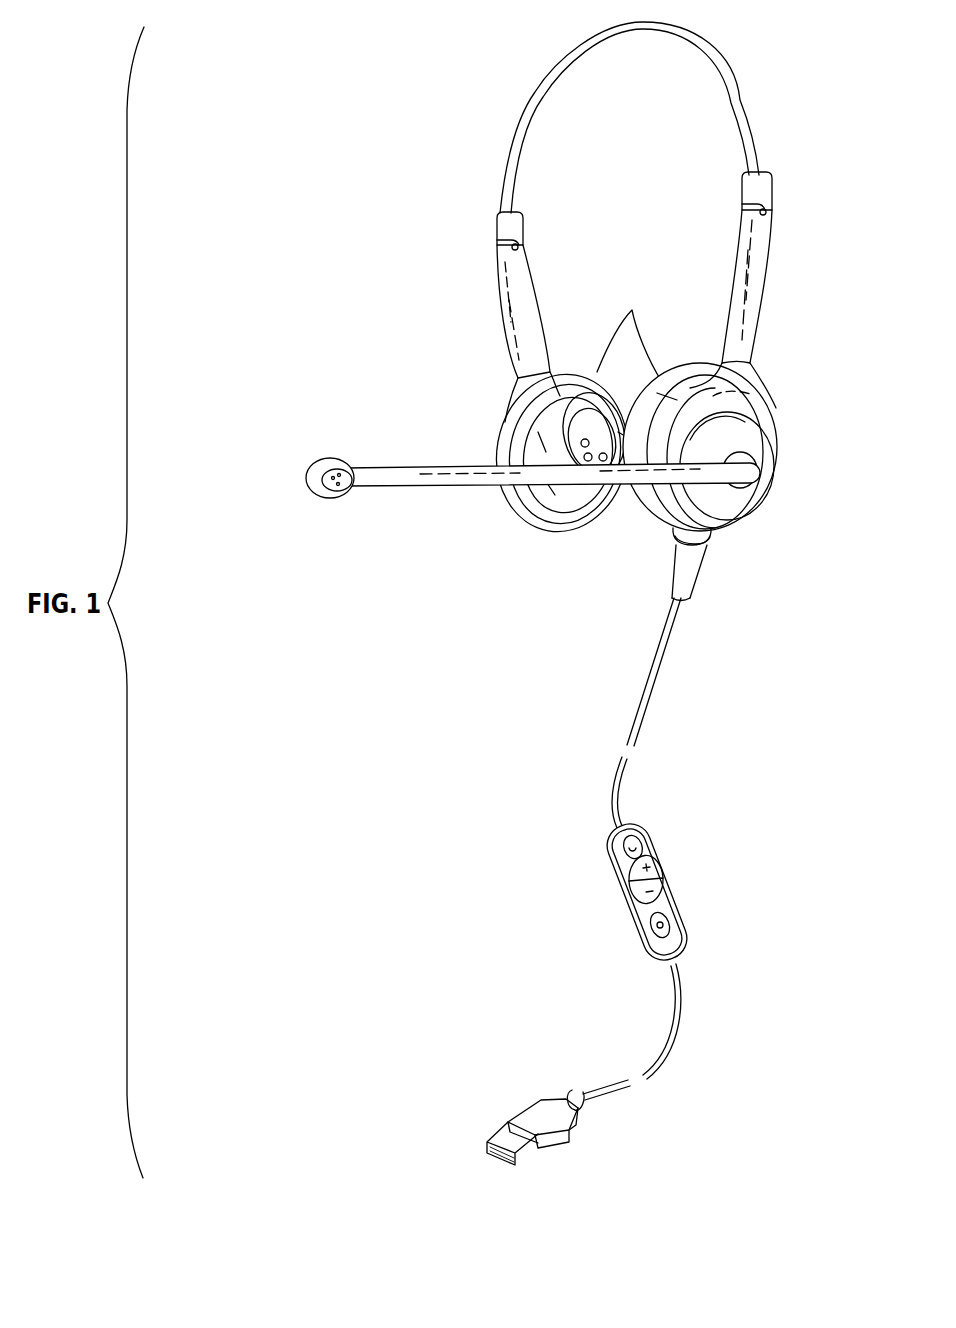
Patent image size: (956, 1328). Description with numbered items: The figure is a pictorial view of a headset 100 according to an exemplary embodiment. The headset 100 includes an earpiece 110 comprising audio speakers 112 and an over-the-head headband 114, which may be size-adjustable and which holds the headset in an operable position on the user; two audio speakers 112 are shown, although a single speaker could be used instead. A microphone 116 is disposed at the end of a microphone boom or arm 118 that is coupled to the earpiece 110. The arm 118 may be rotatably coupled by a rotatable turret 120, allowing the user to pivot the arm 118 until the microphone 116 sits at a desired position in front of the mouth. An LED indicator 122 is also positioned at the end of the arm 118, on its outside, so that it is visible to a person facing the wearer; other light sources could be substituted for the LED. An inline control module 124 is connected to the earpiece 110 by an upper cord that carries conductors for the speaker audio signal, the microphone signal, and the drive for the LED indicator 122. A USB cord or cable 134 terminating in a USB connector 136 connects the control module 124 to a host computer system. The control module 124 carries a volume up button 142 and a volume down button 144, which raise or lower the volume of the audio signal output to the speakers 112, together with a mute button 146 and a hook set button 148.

The headset 100 is at (468, 68).
The earpiece 110 is at (757, 386).
The audio speakers 112 is at (633, 313).
The headband 114 is at (744, 104).
The microphone 116 is at (312, 466).
The microphone boom or arm 118 is at (452, 487).
The rotatable turret 120 is at (764, 445).
The LED indicator 122 is at (326, 494).
The inline control module 124 is at (676, 848).
The USB cord or cable 134 is at (676, 1046).
The USB connector 136 is at (562, 1135).
The volume up button 142 is at (630, 878).
The volume down button 144 is at (640, 894).
The mute button 146 is at (668, 927).
The hook set button 148 is at (636, 840).